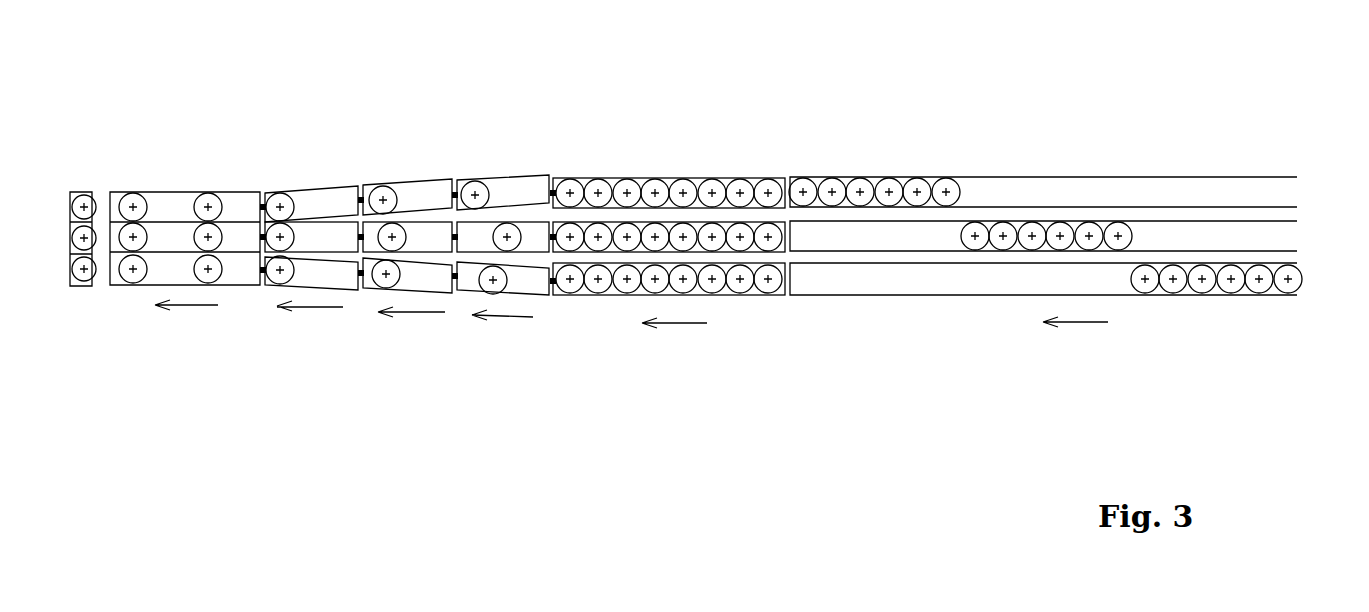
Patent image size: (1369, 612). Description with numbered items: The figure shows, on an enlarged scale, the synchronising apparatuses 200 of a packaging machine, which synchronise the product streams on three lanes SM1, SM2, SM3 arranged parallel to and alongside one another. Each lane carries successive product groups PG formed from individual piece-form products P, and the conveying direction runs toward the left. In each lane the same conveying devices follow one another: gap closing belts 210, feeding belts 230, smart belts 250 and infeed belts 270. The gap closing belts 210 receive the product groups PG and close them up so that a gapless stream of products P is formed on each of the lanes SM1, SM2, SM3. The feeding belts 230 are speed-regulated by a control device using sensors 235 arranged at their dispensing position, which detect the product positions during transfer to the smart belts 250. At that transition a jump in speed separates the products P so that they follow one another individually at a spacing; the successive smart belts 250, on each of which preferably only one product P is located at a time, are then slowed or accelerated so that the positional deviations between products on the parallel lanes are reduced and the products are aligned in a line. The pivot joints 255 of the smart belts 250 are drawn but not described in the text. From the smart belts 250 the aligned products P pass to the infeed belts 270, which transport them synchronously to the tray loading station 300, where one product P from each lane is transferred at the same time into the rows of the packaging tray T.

The synchronising apparatuses 200 is at (433, 485).
The gap closing belts 210 is at (997, 188).
The feeding belts 230 is at (670, 180).
The sensors 235 is at (552, 193).
The smart belts 250 is at (345, 272).
The pivot joints 255 is at (455, 195).
The infeed belts 270 is at (172, 203).
The tray loading station 300 is at (114, 159).
The packaging tray T is at (82, 285).
The product P is at (134, 283).
The product group PG is at (862, 183).
The lane SM1 is at (1283, 185).
The lane SM2 is at (1287, 235).
The lane SM3 is at (1277, 292).